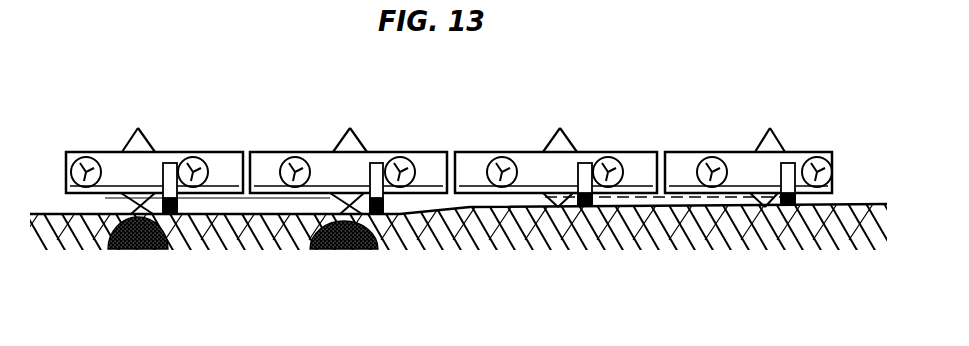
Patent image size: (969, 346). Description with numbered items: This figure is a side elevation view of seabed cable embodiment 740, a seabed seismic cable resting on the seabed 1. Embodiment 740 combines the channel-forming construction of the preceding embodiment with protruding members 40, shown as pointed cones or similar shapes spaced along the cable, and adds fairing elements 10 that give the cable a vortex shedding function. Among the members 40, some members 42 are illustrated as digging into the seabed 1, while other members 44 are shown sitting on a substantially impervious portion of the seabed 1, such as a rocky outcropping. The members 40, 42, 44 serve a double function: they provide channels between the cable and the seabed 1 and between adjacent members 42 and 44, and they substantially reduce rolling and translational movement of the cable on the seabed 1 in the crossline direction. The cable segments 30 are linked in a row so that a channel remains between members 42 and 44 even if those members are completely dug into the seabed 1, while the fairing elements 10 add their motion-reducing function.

The seabed 1 is at (853, 203).
The fairing elements 10 is at (178, 200).
The strip segment 30 is at (253, 147).
The members 40 is at (207, 150).
The members 42 is at (575, 205).
The members 44 is at (120, 250).
The embodiment 740 is at (101, 133).